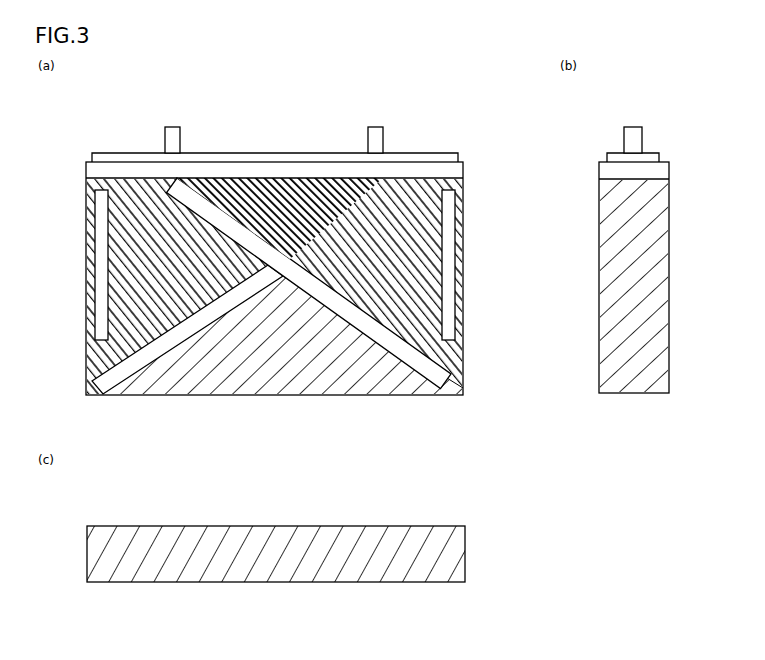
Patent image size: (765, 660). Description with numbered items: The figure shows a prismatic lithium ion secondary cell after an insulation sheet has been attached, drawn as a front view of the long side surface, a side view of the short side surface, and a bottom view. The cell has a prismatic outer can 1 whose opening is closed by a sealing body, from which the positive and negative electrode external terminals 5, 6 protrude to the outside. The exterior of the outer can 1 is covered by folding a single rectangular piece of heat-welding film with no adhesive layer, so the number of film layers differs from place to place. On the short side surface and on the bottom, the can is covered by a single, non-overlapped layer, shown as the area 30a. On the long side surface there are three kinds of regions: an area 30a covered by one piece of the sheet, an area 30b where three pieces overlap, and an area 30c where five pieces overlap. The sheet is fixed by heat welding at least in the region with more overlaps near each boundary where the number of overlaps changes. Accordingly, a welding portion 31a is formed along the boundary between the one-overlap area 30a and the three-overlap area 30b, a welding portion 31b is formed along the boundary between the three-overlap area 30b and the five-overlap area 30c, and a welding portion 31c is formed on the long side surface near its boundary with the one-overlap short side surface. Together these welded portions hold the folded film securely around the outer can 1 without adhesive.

The prismatic outer can 1 is at (450, 172).
The positive electrode external terminal 5 is at (176, 138).
The negative electrode external terminal 6 is at (383, 138).
The area covered by a piece of the insulation sheet 30a is at (297, 386).
The area where three pieces of the insulation sheet are overlapped 30b is at (463, 350).
The area where five pieces of the insulation sheet are overlapped 30c is at (263, 183).
The welding portion 31a is at (305, 345).
The welding portion 31b is at (218, 228).
The welding portion 31c is at (100, 252).